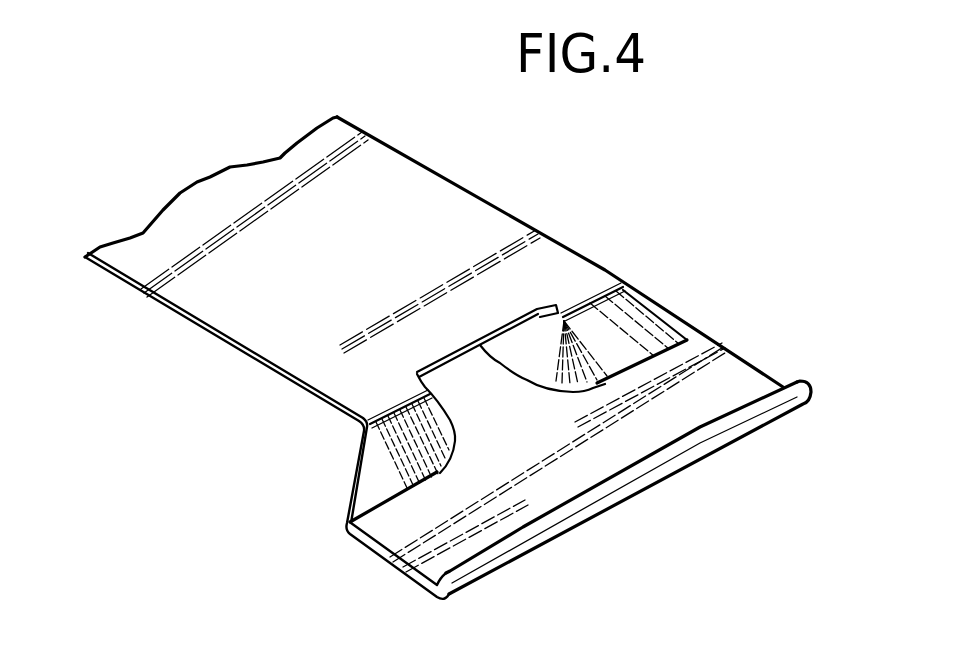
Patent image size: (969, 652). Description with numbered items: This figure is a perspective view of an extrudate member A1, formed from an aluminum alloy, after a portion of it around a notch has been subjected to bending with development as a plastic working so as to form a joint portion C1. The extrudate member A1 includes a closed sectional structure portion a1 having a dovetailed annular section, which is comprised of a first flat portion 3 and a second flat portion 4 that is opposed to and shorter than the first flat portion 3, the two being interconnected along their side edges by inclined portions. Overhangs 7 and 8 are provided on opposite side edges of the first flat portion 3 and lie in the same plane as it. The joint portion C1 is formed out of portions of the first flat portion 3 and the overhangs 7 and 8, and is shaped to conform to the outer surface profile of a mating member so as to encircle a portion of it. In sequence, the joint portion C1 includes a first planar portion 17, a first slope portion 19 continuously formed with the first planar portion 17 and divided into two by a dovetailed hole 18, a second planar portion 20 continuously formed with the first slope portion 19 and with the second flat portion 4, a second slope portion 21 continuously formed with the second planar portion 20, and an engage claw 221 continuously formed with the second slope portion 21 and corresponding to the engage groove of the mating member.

The extrudate member A1 is at (423, 134).
The closed sectional structure portion a1 is at (221, 171).
The joint portion C1 is at (703, 300).
The first flat portion 3 is at (462, 327).
The second flat portion 4 is at (452, 382).
The overhang 7 is at (208, 314).
The overhang 8 is at (452, 200).
The first planar portion 17 is at (558, 280).
The dovetailed hole 18 is at (502, 336).
The first slope portion 19 is at (420, 437).
The second planar portion 20 is at (730, 371).
The second slope portion 21 is at (512, 553).
The engage claw 221 is at (639, 458).